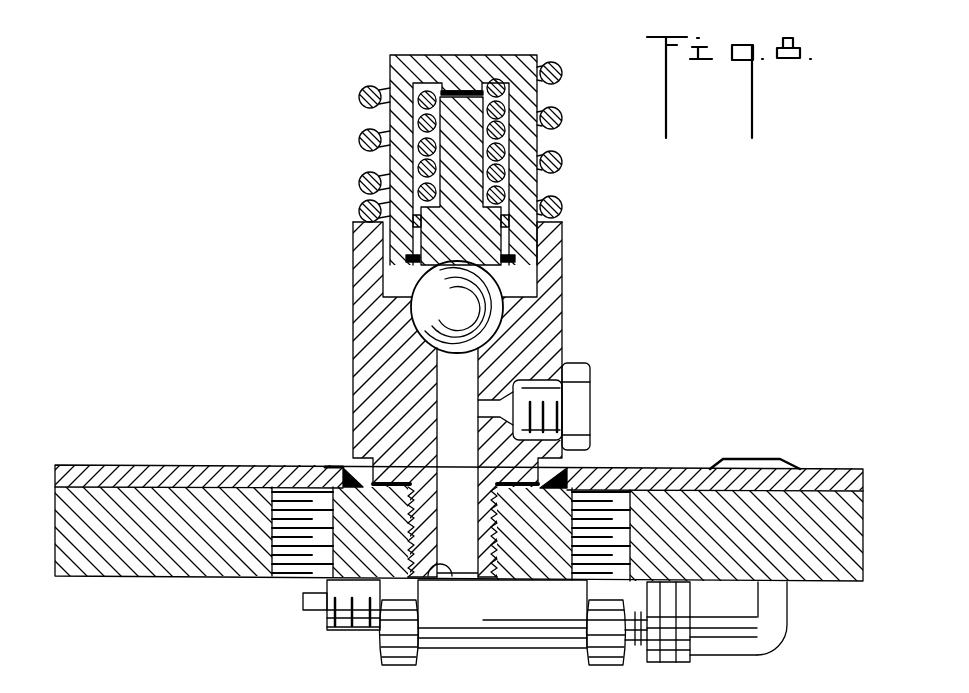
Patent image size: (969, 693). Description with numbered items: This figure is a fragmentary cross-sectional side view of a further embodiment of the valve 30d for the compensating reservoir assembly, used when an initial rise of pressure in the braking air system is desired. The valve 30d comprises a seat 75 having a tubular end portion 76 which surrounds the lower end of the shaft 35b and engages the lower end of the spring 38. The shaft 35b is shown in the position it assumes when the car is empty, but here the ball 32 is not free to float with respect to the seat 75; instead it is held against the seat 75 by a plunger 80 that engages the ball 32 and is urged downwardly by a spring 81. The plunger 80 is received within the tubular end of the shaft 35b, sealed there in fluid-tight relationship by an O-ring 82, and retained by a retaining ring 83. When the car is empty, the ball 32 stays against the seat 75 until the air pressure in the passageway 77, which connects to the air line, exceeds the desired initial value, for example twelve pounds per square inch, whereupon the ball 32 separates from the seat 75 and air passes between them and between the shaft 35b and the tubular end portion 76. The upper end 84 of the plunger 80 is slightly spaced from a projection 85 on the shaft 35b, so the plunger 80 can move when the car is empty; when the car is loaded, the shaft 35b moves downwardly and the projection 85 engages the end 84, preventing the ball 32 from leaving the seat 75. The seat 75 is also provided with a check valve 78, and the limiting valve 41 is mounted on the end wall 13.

The end wall 13 is at (209, 576).
The valve 30d is at (352, 364).
The ball 32 is at (499, 288).
The shaft 35b is at (538, 97).
The spring 38 is at (358, 98).
The limiting valve 41 is at (492, 640).
The seat 75 is at (556, 323).
The tubular end portion 76 is at (556, 243).
The passageway 77 is at (449, 562).
The check valve 78 is at (582, 388).
The plunger 80 is at (506, 210).
The spring 81 is at (500, 150).
The O-ring 82 is at (413, 216).
The retaining ring 83 is at (406, 256).
The upper end of plunger 84 is at (472, 98).
The projection 85 is at (450, 88).